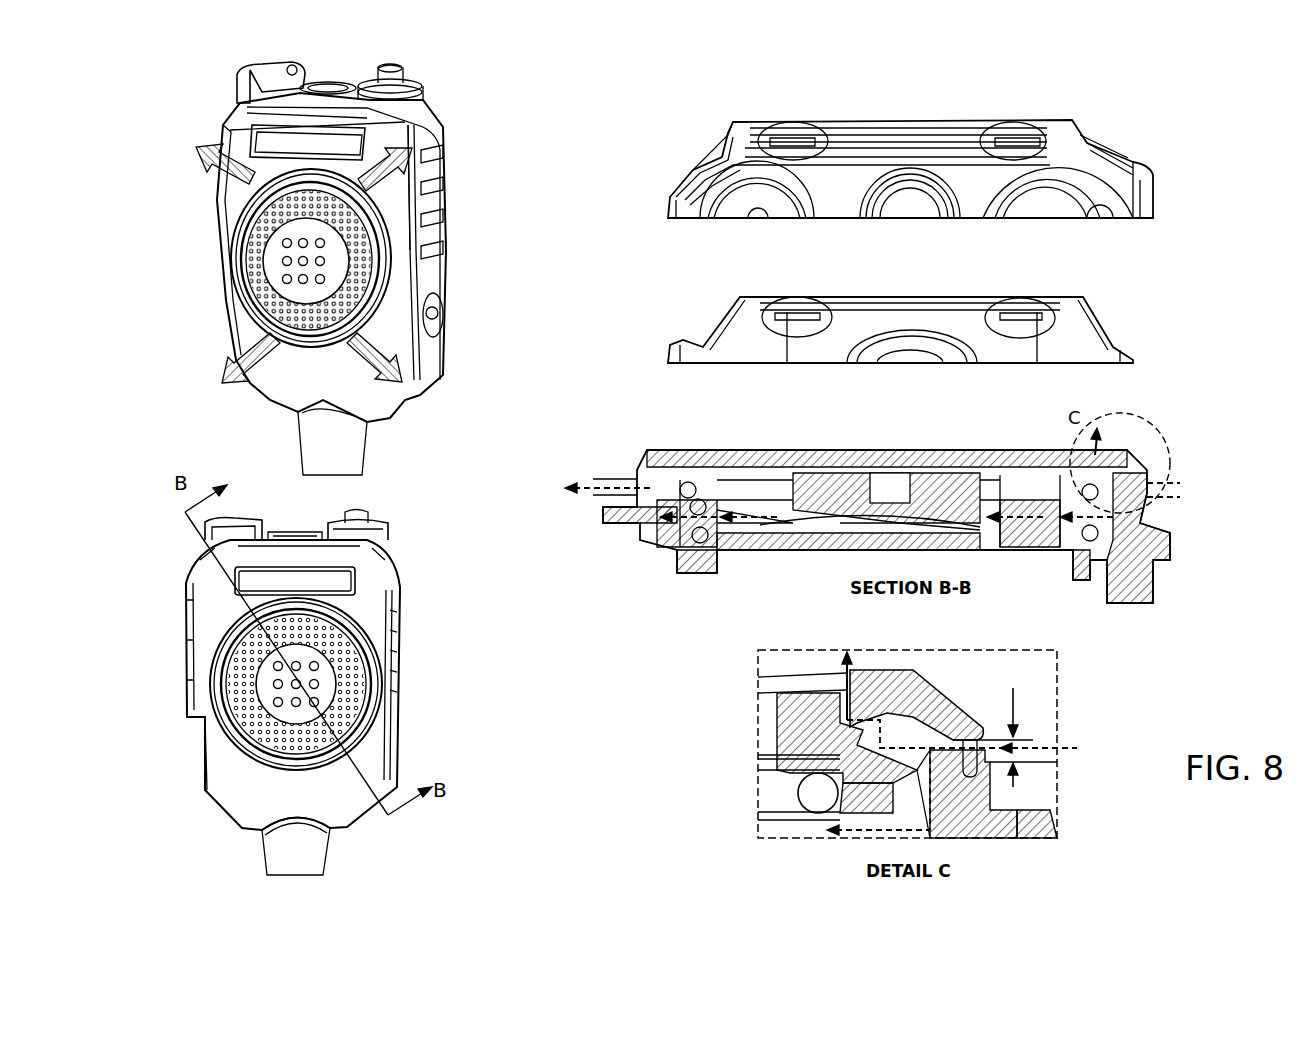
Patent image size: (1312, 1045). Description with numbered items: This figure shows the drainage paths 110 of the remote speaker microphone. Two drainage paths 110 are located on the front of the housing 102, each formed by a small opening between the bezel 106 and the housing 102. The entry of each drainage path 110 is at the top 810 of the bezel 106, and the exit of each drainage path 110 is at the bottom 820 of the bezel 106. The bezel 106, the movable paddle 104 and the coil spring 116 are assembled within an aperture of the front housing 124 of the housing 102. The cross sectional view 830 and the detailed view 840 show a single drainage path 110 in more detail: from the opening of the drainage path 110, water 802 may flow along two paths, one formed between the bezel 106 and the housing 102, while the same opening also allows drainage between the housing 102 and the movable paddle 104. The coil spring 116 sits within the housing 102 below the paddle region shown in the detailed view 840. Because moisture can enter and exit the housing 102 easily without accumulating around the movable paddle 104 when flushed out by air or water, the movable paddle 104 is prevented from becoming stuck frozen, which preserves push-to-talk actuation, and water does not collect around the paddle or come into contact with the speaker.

The housing 102 is at (1180, 497).
The movable paddle 104 is at (335, 258).
The bezel 106 is at (236, 262).
The drainage path 110 is at (243, 185).
The coil spring 116 is at (770, 790).
The front housing 124 is at (397, 227).
The water 802 is at (1180, 483).
The top of the bezel 810 is at (1226, 218).
The bottom of the bezel 820 is at (1212, 364).
The cross sectional view 830 is at (1286, 454).
The detailed view 840 is at (1179, 691).